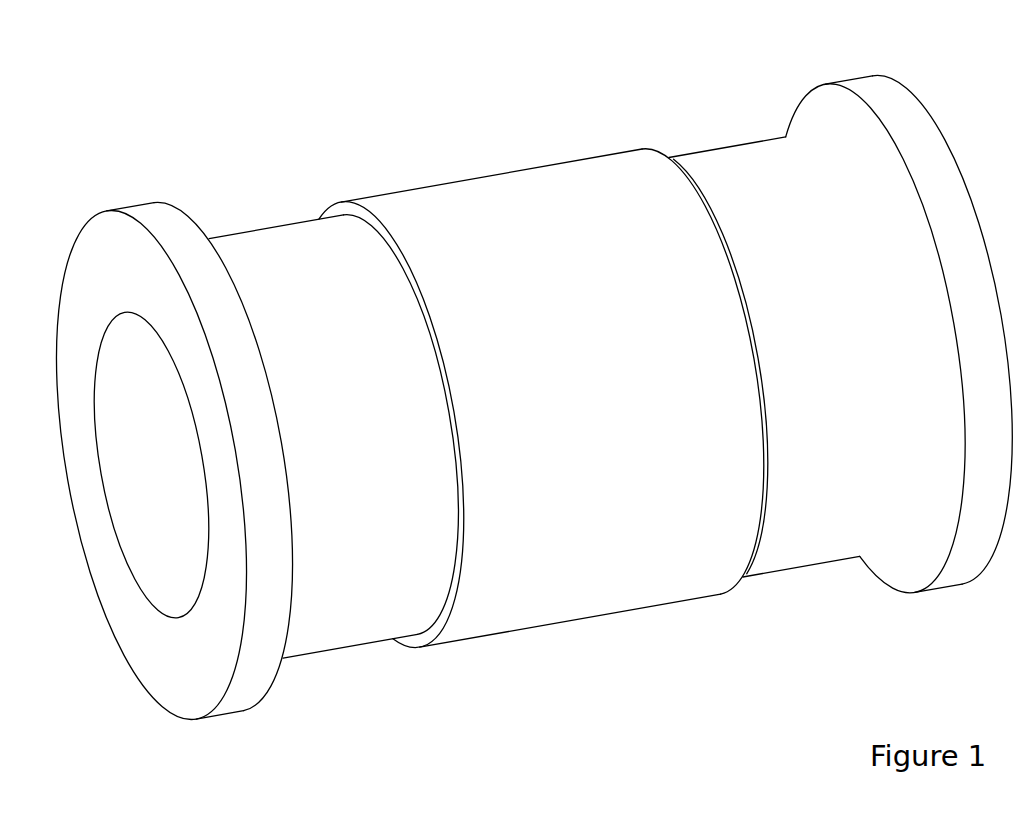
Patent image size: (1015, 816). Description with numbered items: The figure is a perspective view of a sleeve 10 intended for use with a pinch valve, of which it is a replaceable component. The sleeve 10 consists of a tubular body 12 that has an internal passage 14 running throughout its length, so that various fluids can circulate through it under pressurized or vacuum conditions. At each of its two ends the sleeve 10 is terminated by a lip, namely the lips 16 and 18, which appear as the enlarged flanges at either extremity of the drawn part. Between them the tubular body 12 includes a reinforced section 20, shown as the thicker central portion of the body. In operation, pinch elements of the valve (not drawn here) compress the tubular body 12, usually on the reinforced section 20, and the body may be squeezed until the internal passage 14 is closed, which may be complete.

The sleeve 10 is at (176, 74).
The tubular body 12 is at (265, 253).
The internal passage 14 is at (162, 547).
The lip 16 is at (207, 650).
The lip 18 is at (915, 152).
The reinforced section 20 is at (527, 208).